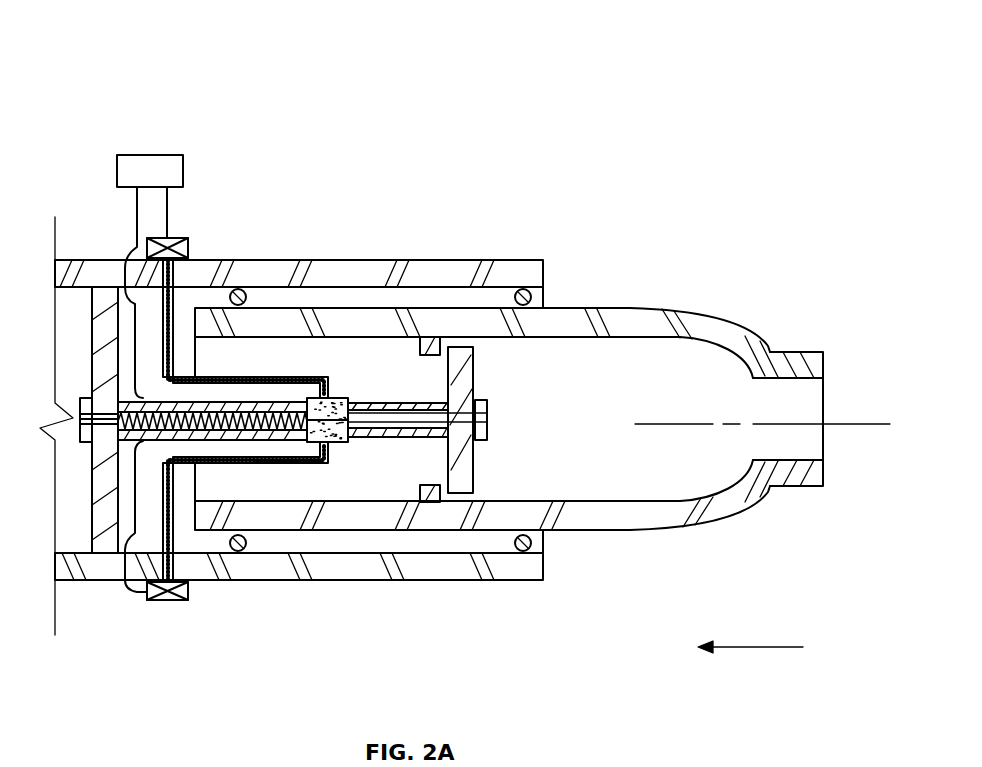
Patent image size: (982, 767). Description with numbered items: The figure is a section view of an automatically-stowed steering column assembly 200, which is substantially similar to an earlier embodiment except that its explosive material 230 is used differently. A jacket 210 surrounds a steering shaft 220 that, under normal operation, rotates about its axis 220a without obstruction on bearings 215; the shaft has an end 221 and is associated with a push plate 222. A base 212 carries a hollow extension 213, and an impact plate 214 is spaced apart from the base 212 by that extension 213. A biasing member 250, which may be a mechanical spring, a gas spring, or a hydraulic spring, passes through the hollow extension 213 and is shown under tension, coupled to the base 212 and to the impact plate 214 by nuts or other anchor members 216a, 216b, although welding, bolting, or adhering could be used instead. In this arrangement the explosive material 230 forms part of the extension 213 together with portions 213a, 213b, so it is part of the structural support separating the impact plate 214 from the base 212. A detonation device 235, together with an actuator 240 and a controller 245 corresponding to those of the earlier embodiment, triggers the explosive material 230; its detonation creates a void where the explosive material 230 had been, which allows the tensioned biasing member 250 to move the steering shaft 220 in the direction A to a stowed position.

The automatically-stowed steering column assembly 200 is at (613, 90).
The jacket 210 is at (527, 276).
The base 212 is at (92, 530).
The extension 213 is at (238, 445).
The portion of extension 213a is at (269, 441).
The portion of extension 213b is at (385, 441).
The impact plate 214 is at (475, 362).
The bearings 215 is at (563, 310).
The anchor member 216a is at (82, 397).
The anchor member 216b is at (490, 418).
The steering shaft 220 is at (608, 308).
The axis 220a is at (860, 427).
The end 221 is at (781, 332).
The push plate 222 is at (421, 338).
The explosive material 230 is at (340, 397).
The detonation device 235 is at (272, 378).
The actuator 240 is at (193, 240).
The controller 245 is at (147, 167).
The biasing member 250 is at (277, 413).